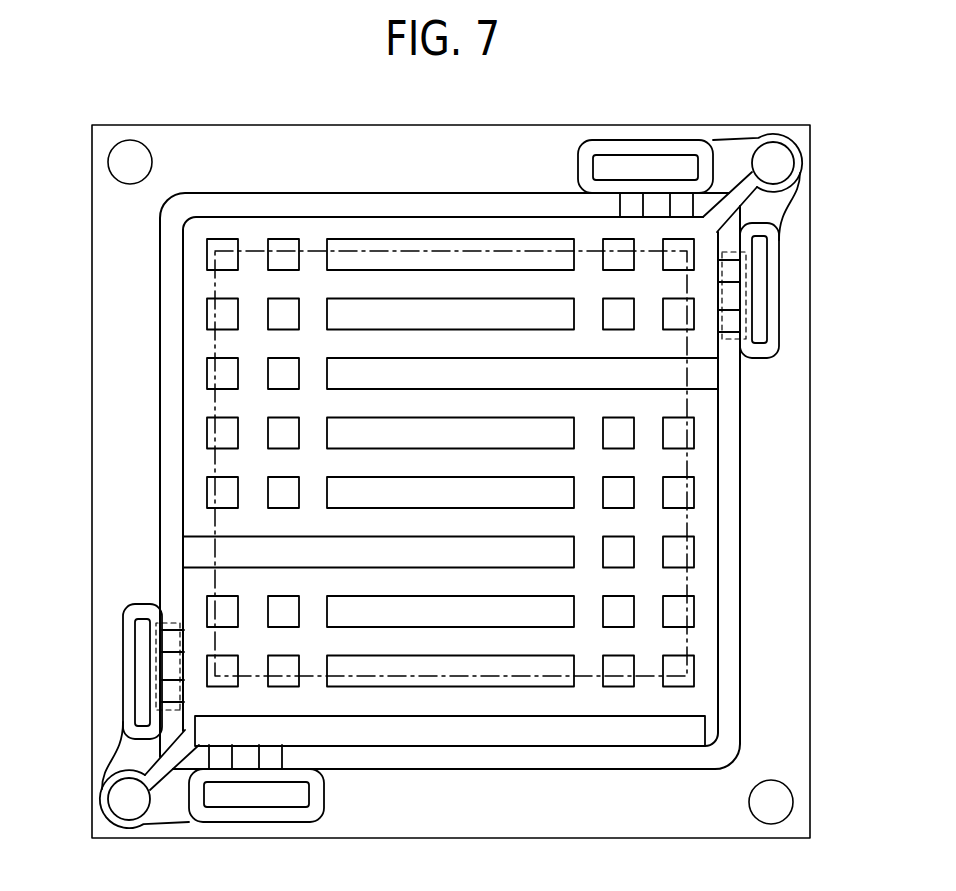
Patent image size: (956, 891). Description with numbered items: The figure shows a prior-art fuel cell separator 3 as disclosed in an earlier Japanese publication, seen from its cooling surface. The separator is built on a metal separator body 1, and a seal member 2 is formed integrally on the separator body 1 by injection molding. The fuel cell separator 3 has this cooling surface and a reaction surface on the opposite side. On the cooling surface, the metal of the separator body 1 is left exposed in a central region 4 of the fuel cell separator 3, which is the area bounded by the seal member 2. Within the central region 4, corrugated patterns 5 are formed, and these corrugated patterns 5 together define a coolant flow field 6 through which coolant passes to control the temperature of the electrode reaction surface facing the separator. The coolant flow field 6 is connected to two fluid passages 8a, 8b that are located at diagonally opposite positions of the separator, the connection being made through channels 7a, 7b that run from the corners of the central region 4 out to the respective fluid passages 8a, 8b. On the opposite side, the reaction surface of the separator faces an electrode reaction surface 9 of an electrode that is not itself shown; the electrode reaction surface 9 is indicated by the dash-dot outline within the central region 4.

The metal separator body 1 is at (252, 170).
The seal member 2 is at (192, 138).
The fuel cell separator 3 is at (626, 84).
The central region 4 is at (195, 468).
The corrugated patterns 5 is at (563, 612).
The coolant flow field 6 is at (563, 461).
The channel 7a is at (748, 190).
The channel 7b is at (156, 770).
The fluid passage 8a is at (775, 158).
The fluid passage 8b is at (125, 806).
The electrode reaction surface 9 is at (456, 688).